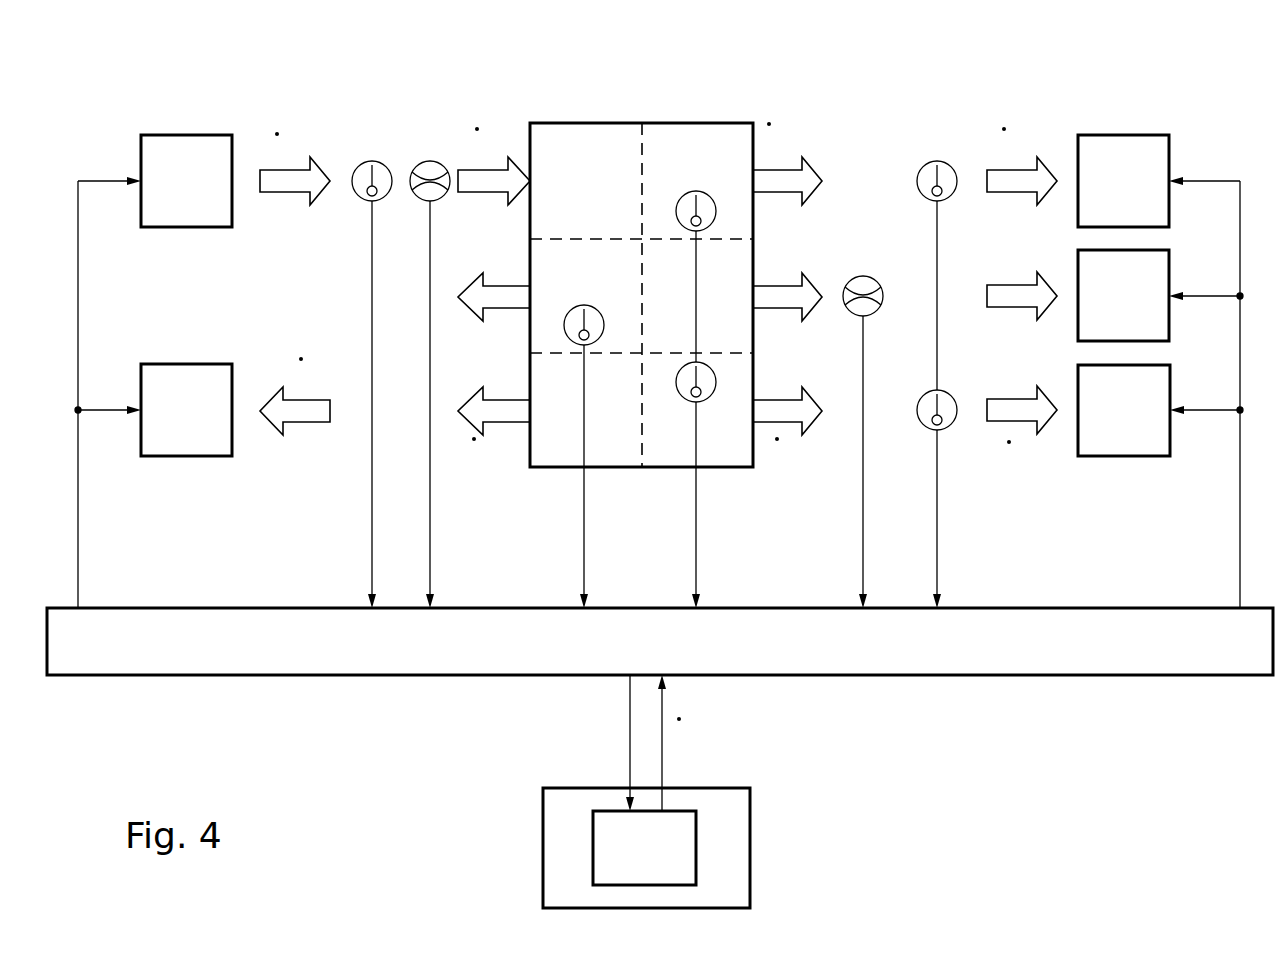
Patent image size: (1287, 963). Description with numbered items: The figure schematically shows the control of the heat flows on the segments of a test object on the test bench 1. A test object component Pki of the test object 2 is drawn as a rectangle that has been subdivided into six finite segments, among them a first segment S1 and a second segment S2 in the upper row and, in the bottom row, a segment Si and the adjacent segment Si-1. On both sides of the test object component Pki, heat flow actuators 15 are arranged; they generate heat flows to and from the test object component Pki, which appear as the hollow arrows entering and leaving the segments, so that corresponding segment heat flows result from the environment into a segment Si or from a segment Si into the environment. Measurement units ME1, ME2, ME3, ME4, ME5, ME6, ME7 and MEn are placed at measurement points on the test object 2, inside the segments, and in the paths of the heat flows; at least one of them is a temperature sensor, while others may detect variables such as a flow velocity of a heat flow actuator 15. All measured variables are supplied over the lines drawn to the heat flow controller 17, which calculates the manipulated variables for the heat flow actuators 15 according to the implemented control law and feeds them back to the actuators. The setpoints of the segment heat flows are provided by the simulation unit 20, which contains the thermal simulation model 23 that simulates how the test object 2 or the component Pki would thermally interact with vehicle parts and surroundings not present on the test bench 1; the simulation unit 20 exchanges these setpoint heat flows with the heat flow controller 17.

The test bench 1 is at (824, 81).
The test object 2 is at (670, 121).
The heat flow actuator 15 is at (212, 199).
The heat flow controller 17 is at (645, 654).
The simulation unit 20 is at (750, 848).
The thermal simulation model 23 is at (664, 864).
The first segment S1 is at (565, 158).
The second segment S2 is at (727, 145).
The segment Si is at (722, 440).
The preceding segment Si-1 is at (558, 437).
The test object component Pki is at (613, 108).
The measurement unit ME1 is at (365, 367).
The measurement unit ME2 is at (423, 367).
The measurement unit ME3 is at (580, 442).
The measurement unit ME4 is at (694, 260).
The measurement unit ME5 is at (713, 485).
The measurement unit ME6 is at (862, 426).
The measurement unit ME7 is at (938, 259).
The n-th measurement unit MEn is at (920, 484).